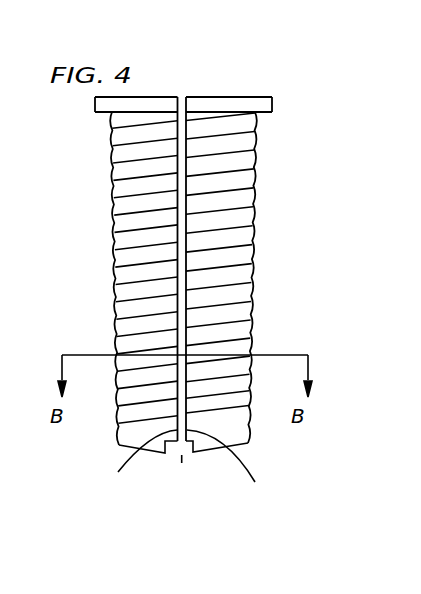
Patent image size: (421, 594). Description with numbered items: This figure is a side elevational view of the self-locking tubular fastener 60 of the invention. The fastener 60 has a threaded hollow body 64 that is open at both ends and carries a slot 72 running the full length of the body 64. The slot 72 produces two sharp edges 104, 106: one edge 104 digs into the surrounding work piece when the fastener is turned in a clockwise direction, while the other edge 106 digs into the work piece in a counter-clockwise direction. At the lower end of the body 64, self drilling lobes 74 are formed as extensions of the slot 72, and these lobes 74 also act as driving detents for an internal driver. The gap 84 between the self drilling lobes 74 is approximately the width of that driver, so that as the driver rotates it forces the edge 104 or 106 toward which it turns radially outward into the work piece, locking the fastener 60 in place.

The tubular fastener 60 is at (255, 242).
The hollow body 64 is at (253, 172).
The slot 72 is at (182, 90).
The self drilling lobes 74 is at (162, 456).
The gap 84 is at (182, 463).
The sharp edge 104 is at (135, 467).
The sharp edge 106 is at (235, 467).